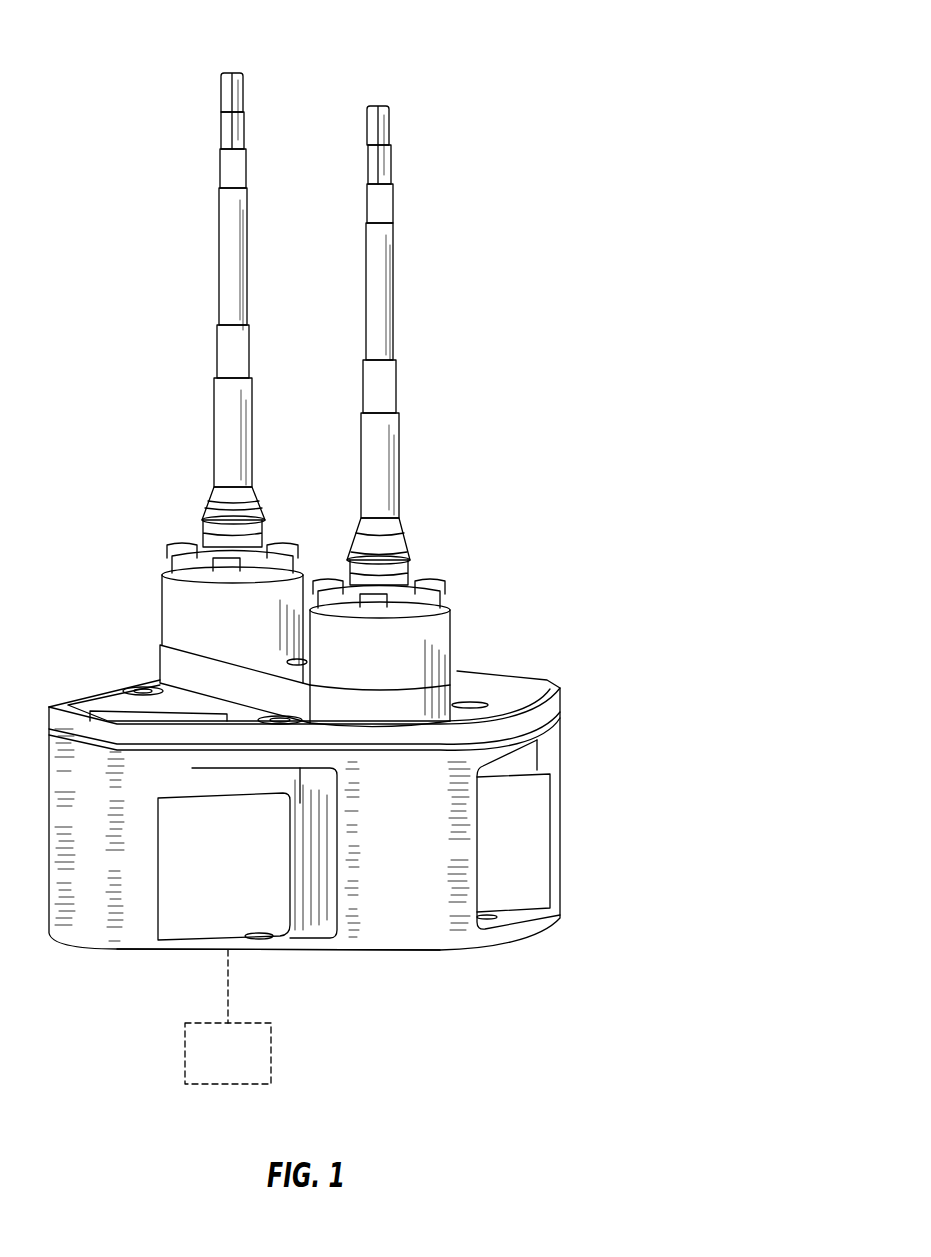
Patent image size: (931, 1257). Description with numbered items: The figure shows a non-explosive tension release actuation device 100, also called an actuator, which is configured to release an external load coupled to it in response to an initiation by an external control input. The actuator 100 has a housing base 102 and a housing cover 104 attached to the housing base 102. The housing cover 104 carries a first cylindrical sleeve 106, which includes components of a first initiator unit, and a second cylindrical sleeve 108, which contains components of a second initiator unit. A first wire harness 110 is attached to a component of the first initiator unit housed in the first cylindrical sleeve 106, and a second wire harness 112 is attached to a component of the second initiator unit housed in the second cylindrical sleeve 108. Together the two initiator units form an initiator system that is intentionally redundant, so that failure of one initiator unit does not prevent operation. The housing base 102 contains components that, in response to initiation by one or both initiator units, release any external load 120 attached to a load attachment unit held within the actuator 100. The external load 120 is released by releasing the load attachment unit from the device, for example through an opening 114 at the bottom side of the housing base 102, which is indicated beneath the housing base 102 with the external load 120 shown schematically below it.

The non-explosive tension release actuation device 100 is at (525, 66).
The housing base 102 is at (423, 848).
The housing cover 104 is at (118, 715).
The first cylindrical sleeve 106 is at (437, 628).
The second cylindrical sleeve 108 is at (178, 612).
The first wire harness 110 is at (363, 385).
The second wire harness 112 is at (217, 352).
The opening 114 is at (401, 957).
The external load 120 is at (186, 1055).